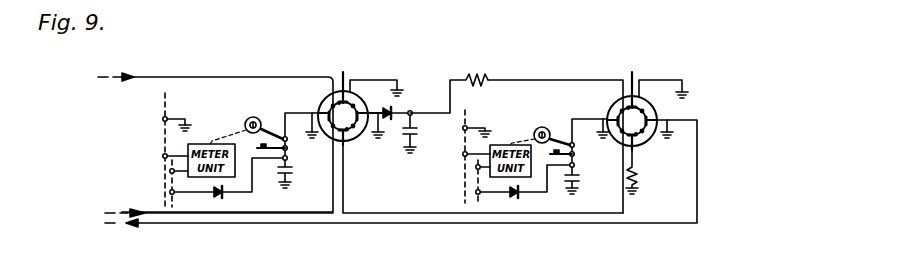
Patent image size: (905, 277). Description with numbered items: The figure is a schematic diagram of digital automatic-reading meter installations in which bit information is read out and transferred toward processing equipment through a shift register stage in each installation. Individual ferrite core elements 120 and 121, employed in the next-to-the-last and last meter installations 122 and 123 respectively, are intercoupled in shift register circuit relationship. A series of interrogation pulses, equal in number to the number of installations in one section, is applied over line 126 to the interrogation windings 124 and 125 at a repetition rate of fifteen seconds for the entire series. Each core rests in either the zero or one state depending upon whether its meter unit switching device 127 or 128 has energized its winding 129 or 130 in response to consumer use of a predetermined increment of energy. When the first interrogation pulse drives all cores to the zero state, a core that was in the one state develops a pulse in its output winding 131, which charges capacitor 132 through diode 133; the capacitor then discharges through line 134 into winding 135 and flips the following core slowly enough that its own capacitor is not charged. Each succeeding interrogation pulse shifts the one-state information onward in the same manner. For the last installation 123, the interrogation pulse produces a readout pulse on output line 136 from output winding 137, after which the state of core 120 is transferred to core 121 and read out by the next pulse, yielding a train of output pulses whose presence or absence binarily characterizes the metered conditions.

The ferrite core element 120 is at (338, 123).
The ferrite core element 121 is at (632, 101).
The meter installation 122 is at (218, 77).
The meter installation 123 is at (599, 68).
The interrogation winding 124 is at (335, 141).
The interrogation winding 125 is at (617, 145).
The interrogation line 126 is at (408, 213).
The meter unit switching device 127 is at (268, 120).
The meter unit switching device 128 is at (554, 133).
The winding 129 is at (318, 111).
The winding 130 is at (613, 109).
The output winding 131 is at (378, 139).
The capacitor 132 is at (414, 130).
The diode 133 is at (384, 108).
The line 134 is at (200, 77).
The winding 135 is at (340, 78).
The output line 136 is at (522, 222).
The output winding 137 is at (653, 150).